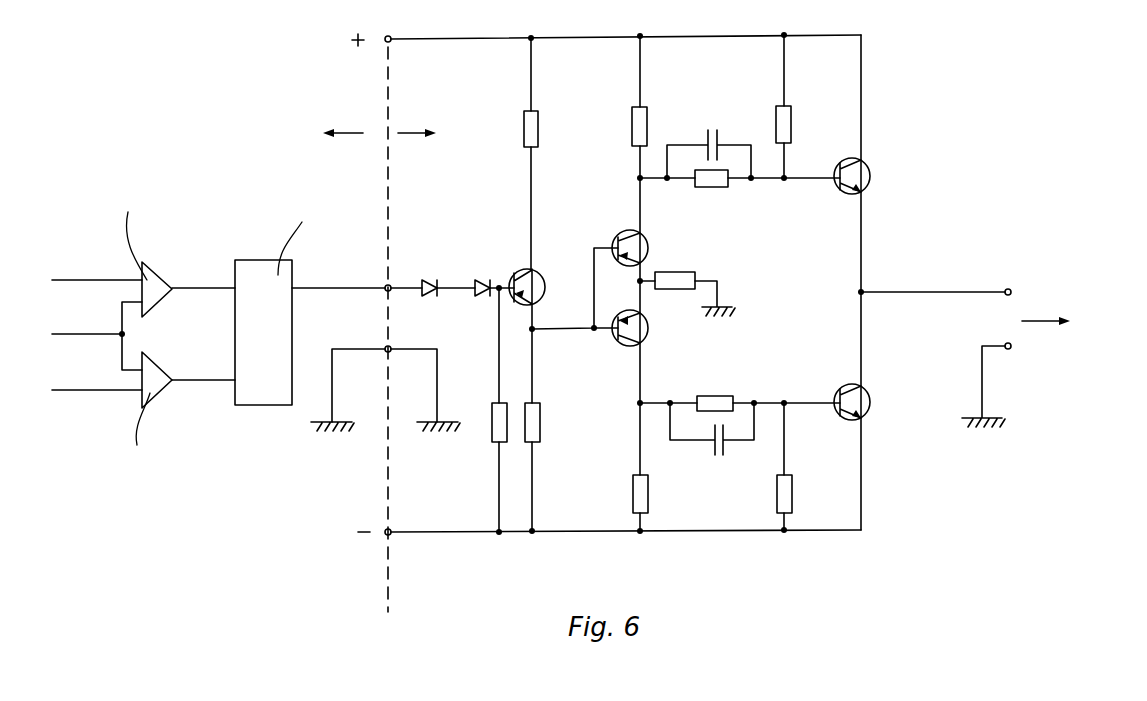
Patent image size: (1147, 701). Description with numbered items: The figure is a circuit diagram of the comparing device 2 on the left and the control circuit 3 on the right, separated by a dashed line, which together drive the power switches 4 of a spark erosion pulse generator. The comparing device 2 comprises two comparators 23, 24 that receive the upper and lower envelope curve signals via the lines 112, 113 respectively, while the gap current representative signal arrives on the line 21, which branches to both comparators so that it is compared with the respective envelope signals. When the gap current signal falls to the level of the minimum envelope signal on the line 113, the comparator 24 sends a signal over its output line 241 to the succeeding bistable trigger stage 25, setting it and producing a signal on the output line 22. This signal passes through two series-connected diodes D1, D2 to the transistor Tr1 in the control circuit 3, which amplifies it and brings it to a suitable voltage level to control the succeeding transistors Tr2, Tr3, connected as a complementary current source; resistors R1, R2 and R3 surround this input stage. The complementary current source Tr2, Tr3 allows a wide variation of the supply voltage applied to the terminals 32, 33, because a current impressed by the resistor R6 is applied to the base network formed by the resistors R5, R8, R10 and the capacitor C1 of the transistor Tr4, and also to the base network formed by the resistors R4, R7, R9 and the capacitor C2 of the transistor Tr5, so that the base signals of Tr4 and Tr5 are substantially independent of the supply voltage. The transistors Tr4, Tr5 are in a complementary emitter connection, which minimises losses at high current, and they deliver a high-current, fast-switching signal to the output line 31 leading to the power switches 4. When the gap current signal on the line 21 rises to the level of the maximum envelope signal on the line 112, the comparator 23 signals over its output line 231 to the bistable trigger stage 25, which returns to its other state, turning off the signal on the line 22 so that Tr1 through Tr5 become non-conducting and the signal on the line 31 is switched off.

The supply voltage terminal 33 is at (606, 26).
The supply voltage terminal 32 is at (608, 519).
The comparing device 2 is at (290, 150).
The control circuit 3 is at (462, 147).
The power switches 4 is at (1112, 334).
The output line 31 is at (934, 283).
The output line 22 is at (357, 280).
The comparator 24 is at (150, 268).
The comparator 23 is at (152, 392).
The bistable trigger stage 25 is at (264, 268).
The line 21 is at (97, 336).
The line 113 is at (97, 270).
The line 112 is at (97, 380).
The output line 241 is at (203, 276).
The output line 231 is at (203, 370).
The diode D1 is at (430, 278).
The diode D2 is at (478, 278).
The transistor Tr1 is at (535, 273).
The transistor Tr2 is at (646, 238).
The transistor Tr3 is at (646, 333).
The transistor Tr4 is at (871, 177).
The transistor Tr5 is at (871, 410).
The resistor R1 is at (497, 432).
The resistor R2 is at (535, 428).
The resistor R3 is at (539, 128).
The resistor R4 is at (633, 498).
The resistor R5 is at (648, 120).
The resistor R6 is at (687, 290).
The resistor R7 is at (718, 396).
The resistor R8 is at (712, 188).
The resistor R9 is at (793, 488).
The resistor R10 is at (792, 125).
The capacitor C1 is at (716, 128).
The capacitor C2 is at (719, 458).